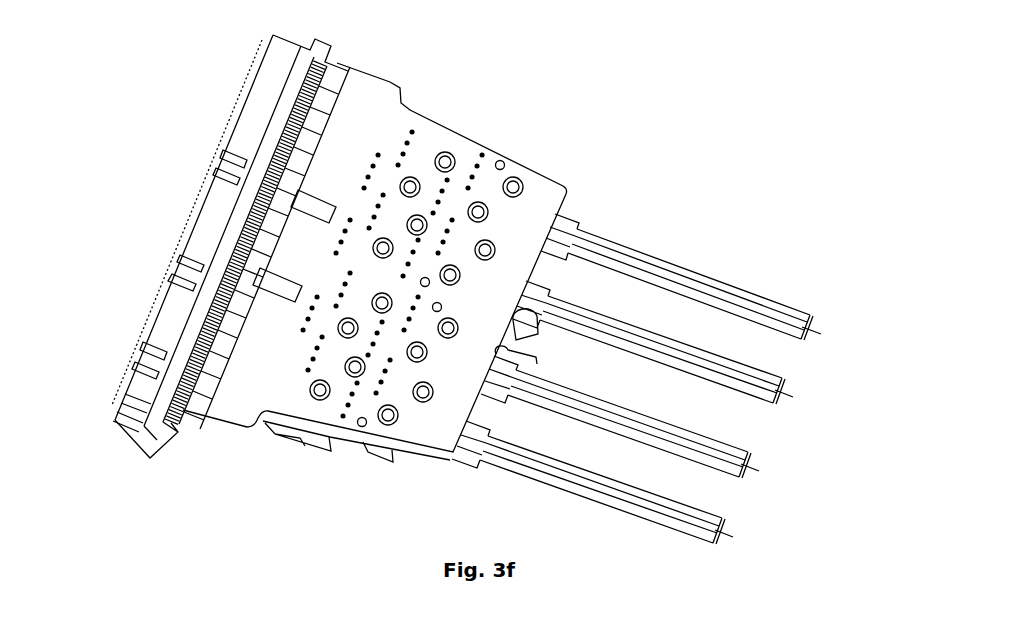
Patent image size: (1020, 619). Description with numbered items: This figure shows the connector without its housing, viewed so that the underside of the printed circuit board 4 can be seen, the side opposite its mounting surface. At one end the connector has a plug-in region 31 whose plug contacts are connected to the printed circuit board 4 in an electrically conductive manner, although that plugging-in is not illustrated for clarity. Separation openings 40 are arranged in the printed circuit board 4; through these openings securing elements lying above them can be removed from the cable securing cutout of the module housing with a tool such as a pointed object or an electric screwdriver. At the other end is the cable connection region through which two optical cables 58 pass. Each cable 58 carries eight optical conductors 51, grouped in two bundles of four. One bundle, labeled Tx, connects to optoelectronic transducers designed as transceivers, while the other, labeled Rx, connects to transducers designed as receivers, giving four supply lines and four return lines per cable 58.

The plug-in region 31 is at (124, 201).
The printed circuit board 4 is at (375, 248).
The separation opening 40 is at (455, 158).
The optical conductor 51 is at (605, 247).
The optical cable 58 is at (872, 323).